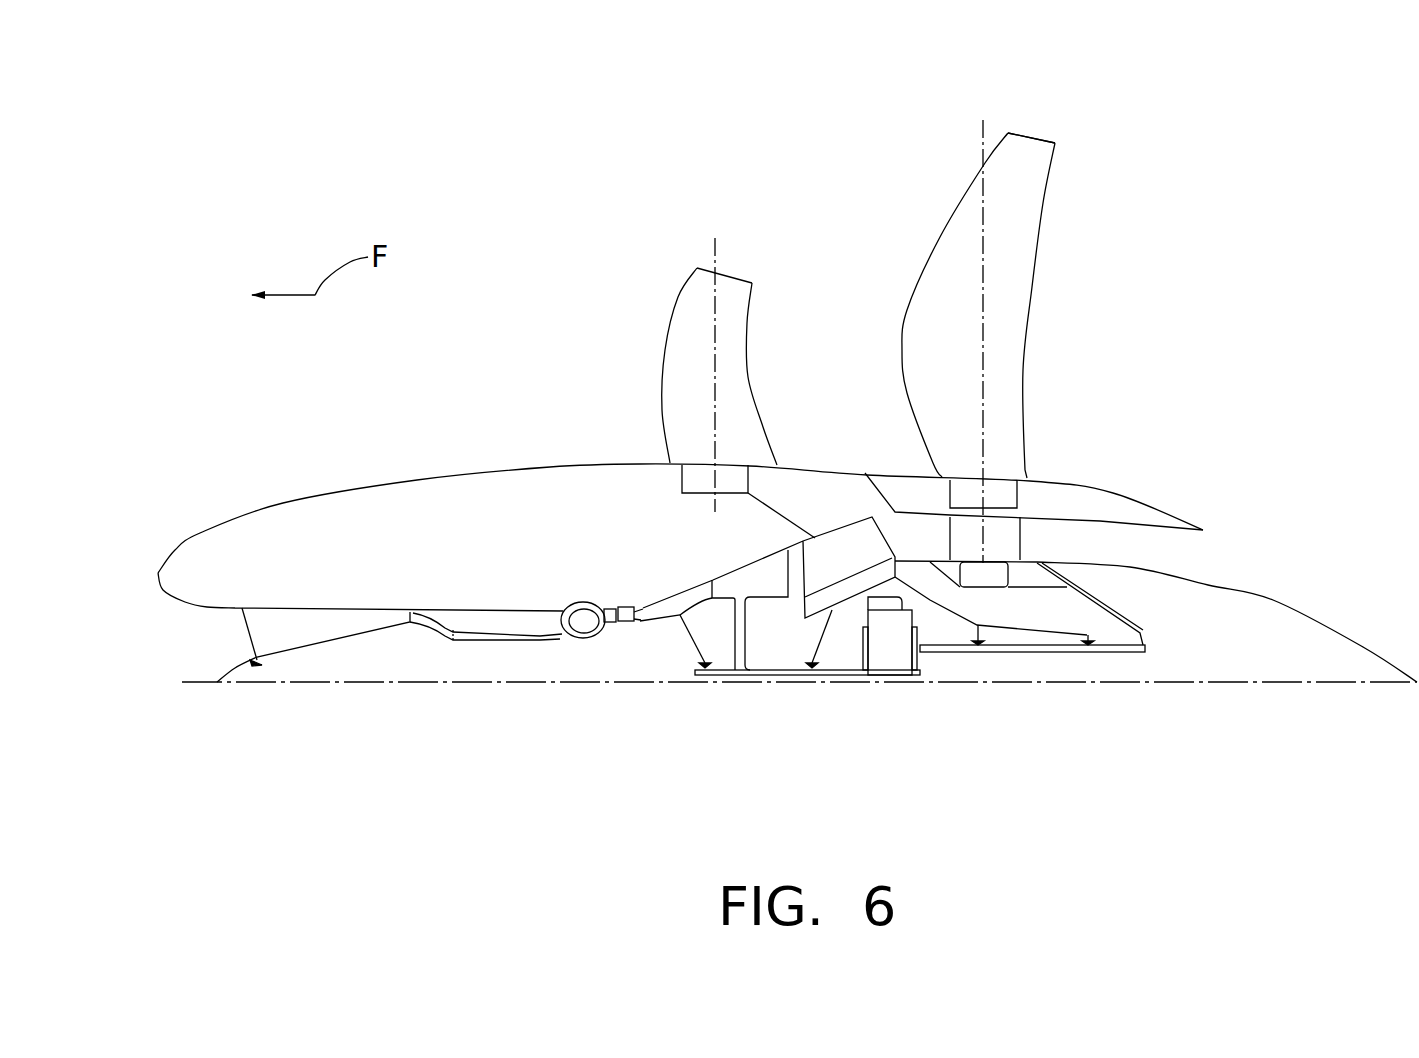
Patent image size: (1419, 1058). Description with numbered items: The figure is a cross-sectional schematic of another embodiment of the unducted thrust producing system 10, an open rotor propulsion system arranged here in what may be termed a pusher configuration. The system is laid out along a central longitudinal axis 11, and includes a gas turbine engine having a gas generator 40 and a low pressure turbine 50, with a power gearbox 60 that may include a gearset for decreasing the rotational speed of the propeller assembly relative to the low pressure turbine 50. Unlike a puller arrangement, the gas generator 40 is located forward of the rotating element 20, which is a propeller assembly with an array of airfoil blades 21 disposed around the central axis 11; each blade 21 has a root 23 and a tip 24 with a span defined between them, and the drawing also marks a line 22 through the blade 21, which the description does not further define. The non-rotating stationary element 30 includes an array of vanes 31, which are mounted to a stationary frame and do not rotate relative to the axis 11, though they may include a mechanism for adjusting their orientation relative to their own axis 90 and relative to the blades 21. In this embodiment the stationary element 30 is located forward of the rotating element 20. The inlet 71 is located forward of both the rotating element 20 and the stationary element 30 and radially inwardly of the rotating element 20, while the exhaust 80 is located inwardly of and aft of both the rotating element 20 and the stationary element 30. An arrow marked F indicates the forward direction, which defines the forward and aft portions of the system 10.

The unducted thrust producing system 10 is at (718, 112).
The central longitudinal axis 11 is at (363, 683).
The rotating element 20 is at (1195, 218).
The airfoil blade 21 is at (1030, 305).
The rear fin pivot axis 22 is at (981, 138).
The root 23 is at (1035, 500).
The tip 24 is at (1032, 135).
The non-rotating stationary element 30 is at (577, 308).
The vane 31 is at (750, 377).
The gas generator 40 is at (417, 547).
The low pressure turbine 50 is at (757, 572).
The power gearbox 60 is at (890, 660).
The inlet 71 is at (217, 638).
The exhaust 80 is at (1227, 550).
The axis 90 is at (713, 253).